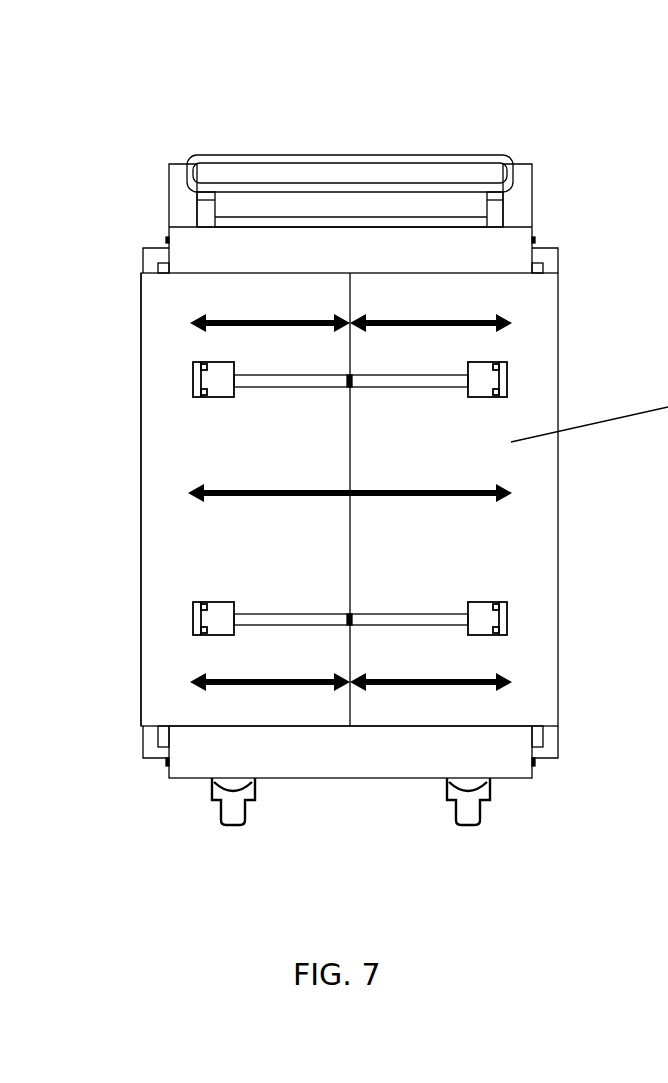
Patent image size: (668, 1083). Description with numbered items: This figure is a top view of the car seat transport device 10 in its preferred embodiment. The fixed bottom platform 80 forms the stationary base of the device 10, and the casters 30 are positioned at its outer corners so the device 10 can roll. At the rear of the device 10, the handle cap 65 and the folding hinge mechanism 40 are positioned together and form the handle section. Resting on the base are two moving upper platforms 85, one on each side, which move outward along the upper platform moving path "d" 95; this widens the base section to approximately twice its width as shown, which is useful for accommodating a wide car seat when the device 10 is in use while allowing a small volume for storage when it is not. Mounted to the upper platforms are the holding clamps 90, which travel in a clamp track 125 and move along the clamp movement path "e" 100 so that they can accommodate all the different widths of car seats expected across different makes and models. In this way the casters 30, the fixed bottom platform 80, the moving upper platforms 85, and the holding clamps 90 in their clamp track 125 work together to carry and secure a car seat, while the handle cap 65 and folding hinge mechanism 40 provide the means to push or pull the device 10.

The device 10 is at (104, 233).
The casters 30 is at (243, 815).
The folding hinge mechanism 40 is at (330, 200).
The handle cap 65 is at (283, 178).
The fixed bottom platform 80 is at (363, 250).
The moving upper platforms 85 is at (172, 540).
The holding clamps 90 is at (208, 381).
The upper platform moving path "d" 95 is at (485, 483).
The clamp movement path "e" 100 is at (270, 275).
The clamp track 125 is at (270, 380).